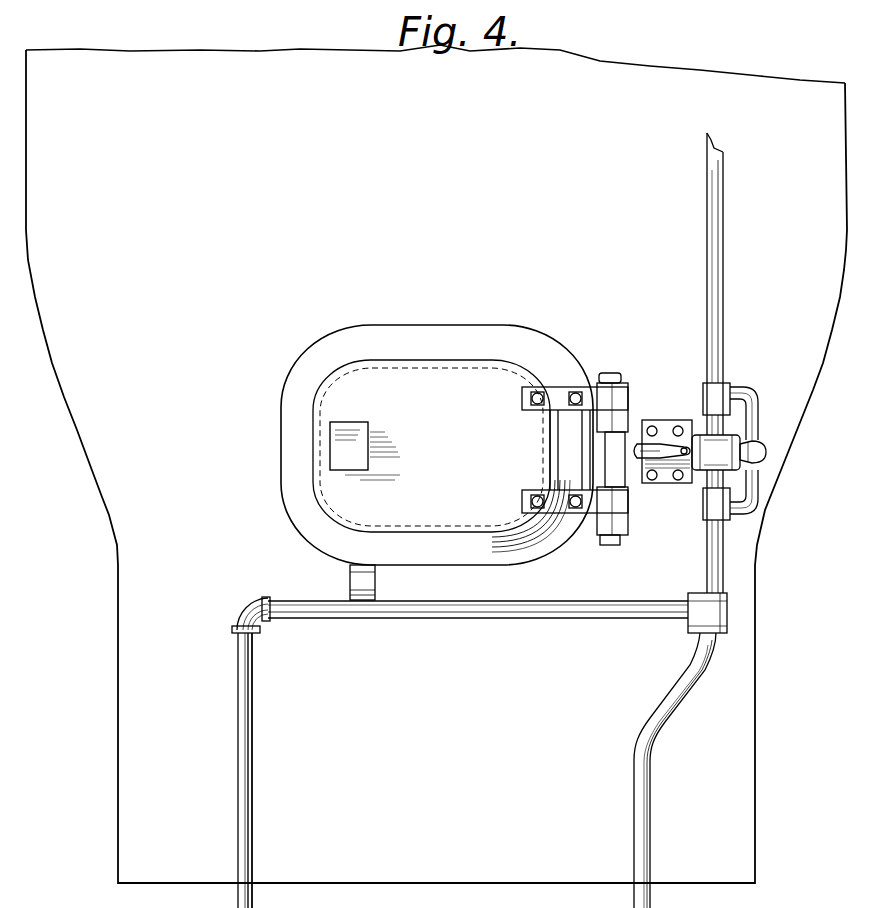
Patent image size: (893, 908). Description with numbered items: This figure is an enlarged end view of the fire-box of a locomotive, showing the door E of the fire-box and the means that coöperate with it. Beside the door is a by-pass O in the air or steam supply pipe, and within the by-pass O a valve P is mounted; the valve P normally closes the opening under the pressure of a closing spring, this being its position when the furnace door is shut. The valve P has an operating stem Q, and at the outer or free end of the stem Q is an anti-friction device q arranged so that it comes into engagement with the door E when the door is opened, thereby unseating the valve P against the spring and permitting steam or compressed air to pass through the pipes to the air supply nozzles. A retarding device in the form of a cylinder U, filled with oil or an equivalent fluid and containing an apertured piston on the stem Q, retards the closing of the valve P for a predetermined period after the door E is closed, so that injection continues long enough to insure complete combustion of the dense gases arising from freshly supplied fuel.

The door of the fire-box E is at (454, 445).
The by-pass O is at (759, 478).
The valve P is at (757, 452).
The operating stem Q is at (676, 428).
The anti-friction device q is at (645, 459).
The cylinder U is at (700, 472).